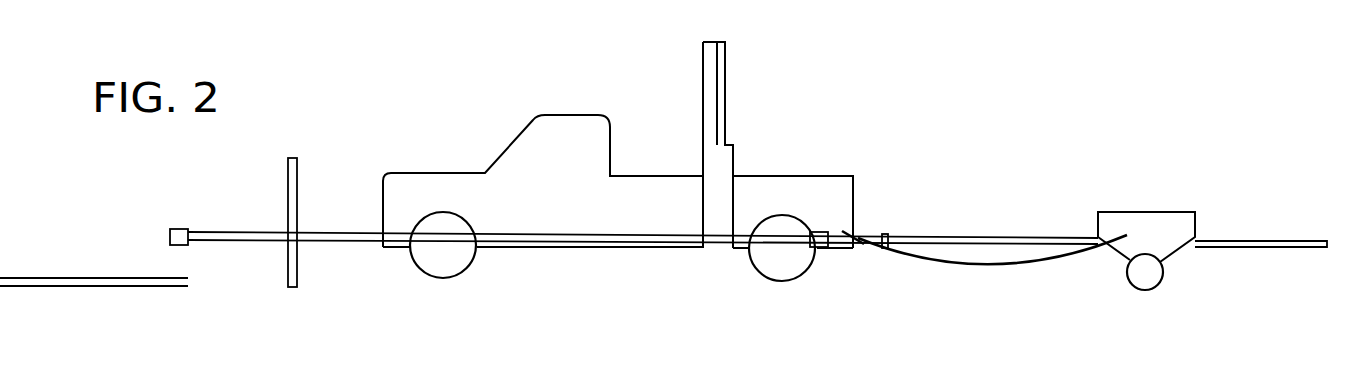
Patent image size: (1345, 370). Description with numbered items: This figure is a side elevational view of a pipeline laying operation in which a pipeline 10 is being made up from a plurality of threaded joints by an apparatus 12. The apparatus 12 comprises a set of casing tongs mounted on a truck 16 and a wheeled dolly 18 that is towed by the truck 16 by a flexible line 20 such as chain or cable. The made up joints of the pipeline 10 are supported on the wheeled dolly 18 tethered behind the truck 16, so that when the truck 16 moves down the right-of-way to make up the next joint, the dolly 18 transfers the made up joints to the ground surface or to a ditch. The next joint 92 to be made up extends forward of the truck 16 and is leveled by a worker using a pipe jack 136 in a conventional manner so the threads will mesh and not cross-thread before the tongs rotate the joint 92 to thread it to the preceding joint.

The pipeline 10 is at (1168, 171).
The apparatus 12 is at (618, 161).
The truck 16 is at (817, 185).
The wheeled dolly 18 is at (1172, 193).
The flexible line 20 is at (984, 261).
The next joint 92 is at (578, 233).
The pipe jack 136 is at (298, 173).